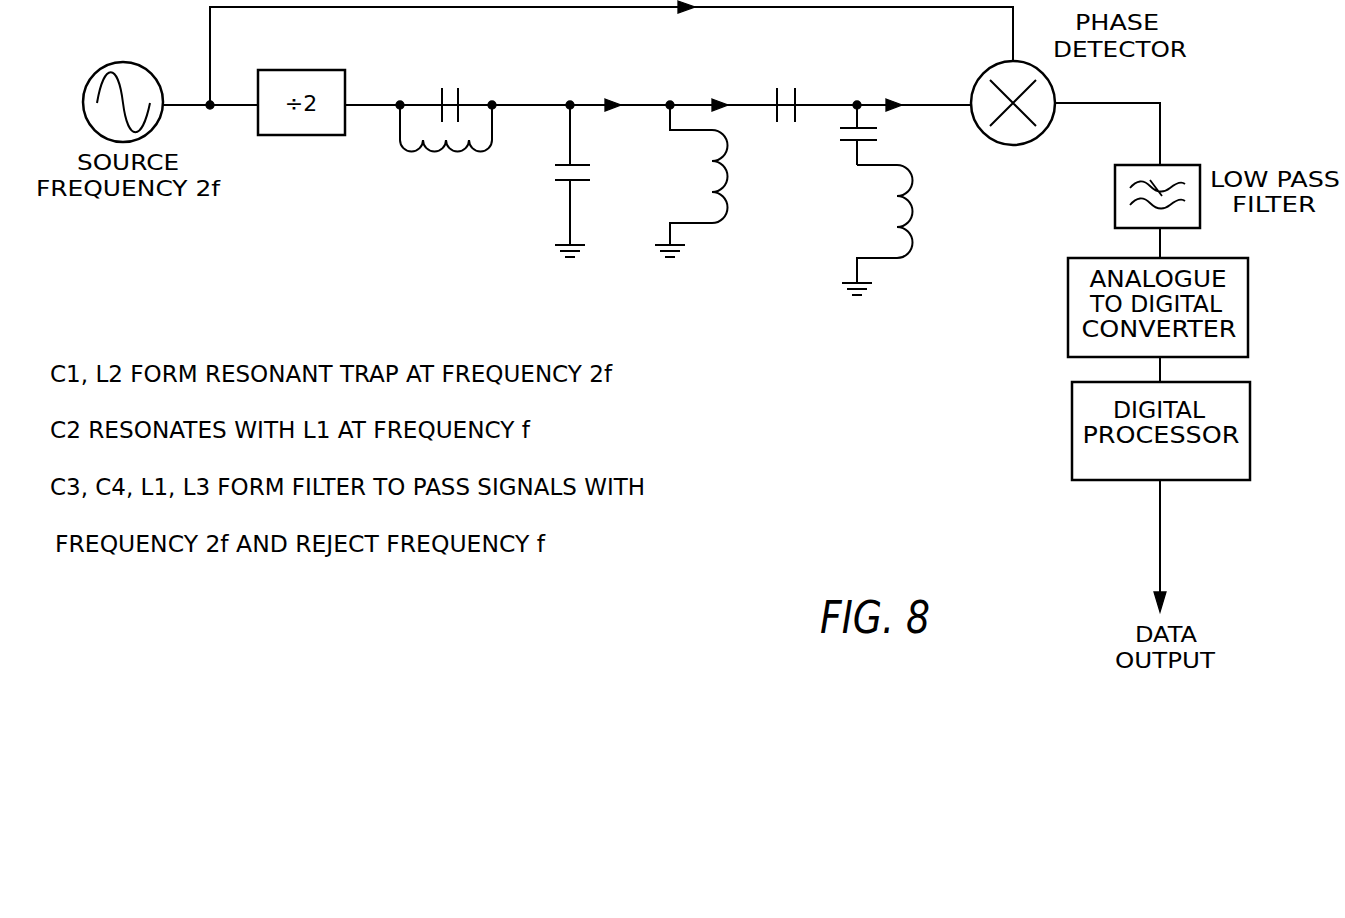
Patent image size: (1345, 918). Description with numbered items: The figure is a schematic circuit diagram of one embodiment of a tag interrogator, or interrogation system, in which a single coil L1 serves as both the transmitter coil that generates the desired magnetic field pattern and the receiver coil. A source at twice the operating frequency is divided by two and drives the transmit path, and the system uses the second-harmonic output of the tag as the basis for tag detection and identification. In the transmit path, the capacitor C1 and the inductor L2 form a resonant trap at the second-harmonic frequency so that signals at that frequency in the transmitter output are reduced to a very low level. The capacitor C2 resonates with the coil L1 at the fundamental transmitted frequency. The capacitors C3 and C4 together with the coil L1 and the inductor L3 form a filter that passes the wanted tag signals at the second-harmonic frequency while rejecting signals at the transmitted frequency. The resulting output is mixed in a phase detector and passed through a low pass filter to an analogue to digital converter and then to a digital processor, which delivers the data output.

The capacitor C1 is at (446, 92).
The inductor L2 is at (446, 143).
The capacitor C2 is at (562, 181).
The coil L1 is at (684, 181).
The capacitor C3 is at (785, 91).
The capacitor C4 is at (847, 136).
The inductor L3 is at (877, 230).